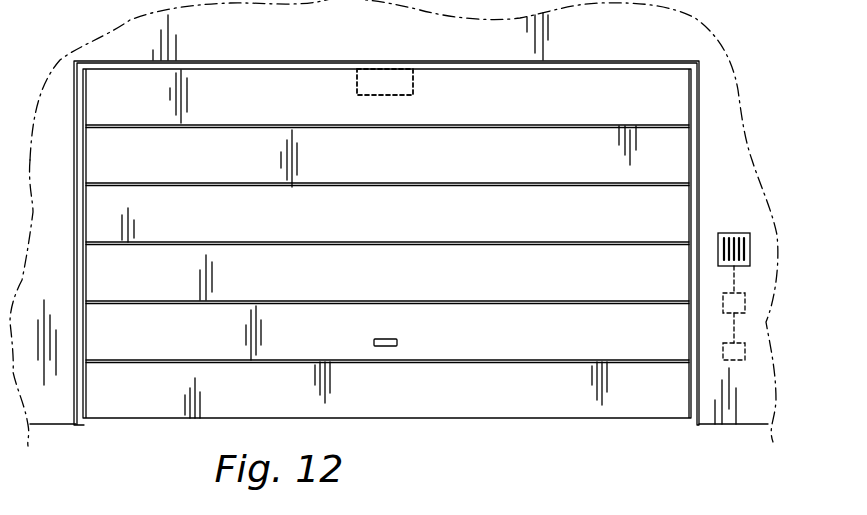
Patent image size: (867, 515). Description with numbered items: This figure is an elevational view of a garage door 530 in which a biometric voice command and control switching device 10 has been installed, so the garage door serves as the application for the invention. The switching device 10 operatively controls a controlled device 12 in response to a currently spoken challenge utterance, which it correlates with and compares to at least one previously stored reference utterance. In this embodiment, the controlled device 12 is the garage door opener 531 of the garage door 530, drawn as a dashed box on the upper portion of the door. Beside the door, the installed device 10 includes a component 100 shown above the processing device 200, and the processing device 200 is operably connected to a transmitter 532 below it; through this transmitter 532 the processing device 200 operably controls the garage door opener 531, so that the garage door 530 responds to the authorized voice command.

The biometric voice command and control switching device 10 is at (747, 207).
The controlled device 12 is at (405, 58).
The keypad controller 100 is at (750, 248).
The processing device 200 is at (745, 303).
The garage door 530 is at (421, 397).
The garage door opener 531 is at (389, 80).
The transmitter 532 is at (745, 352).